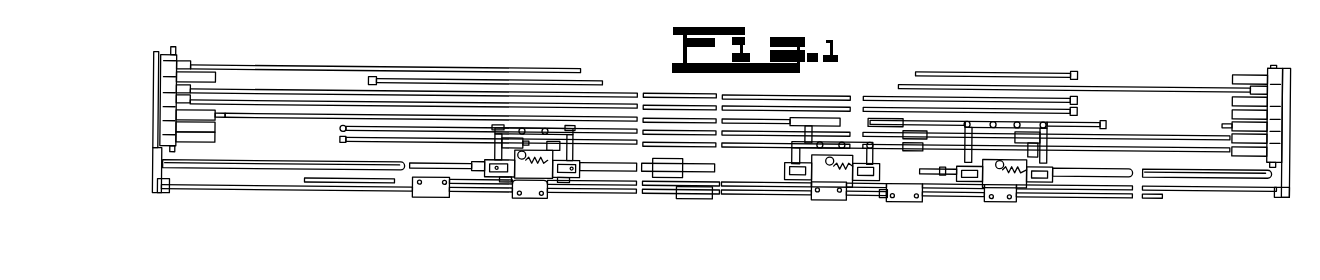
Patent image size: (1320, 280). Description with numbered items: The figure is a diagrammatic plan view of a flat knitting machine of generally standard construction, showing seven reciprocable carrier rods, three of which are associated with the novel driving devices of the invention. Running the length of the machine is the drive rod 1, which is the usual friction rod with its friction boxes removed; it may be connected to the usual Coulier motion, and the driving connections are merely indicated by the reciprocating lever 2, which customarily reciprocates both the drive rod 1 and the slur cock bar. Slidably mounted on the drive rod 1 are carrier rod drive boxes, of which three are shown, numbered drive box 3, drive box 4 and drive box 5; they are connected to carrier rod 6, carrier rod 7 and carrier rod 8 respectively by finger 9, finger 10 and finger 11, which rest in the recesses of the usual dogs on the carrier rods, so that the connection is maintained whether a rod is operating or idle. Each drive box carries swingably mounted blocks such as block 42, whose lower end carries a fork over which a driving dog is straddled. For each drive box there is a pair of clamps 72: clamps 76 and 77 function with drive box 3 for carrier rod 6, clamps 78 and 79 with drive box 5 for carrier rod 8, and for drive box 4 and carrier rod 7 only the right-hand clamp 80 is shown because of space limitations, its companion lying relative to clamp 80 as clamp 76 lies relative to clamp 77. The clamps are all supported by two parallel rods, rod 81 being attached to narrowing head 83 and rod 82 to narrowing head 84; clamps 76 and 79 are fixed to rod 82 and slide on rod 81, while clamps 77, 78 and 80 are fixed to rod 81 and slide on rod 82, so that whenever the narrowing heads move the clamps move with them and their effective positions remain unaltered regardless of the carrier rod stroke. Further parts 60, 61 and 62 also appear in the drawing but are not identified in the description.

The drive rod 1 is at (283, 167).
The reciprocating lever 2 is at (690, 193).
The drive box 3 is at (523, 183).
The drive box 4 is at (1021, 184).
The drive box 5 is at (821, 179).
The carrier rod 6 is at (1183, 143).
The carrier rod 7 is at (1158, 133).
The carrier rod 8 is at (1087, 119).
The finger 9 is at (502, 145).
The finger 10 is at (1045, 135).
The finger 11 is at (805, 136).
The block 42 is at (1045, 175).
The guide rod 60 is at (242, 165).
The connecting rod 61 is at (478, 172).
The connecting rod 62 is at (595, 173).
The clamps 72 is at (895, 195).
The clamp 76 is at (430, 200).
The clamp 77 is at (531, 200).
The clamp 78 is at (830, 200).
The clamp 79 is at (907, 200).
The clamp 80 is at (1000, 200).
The rod 81 is at (243, 195).
The rod 82 is at (331, 183).
The narrowing head 83 is at (160, 197).
The narrowing head 84 is at (1283, 170).